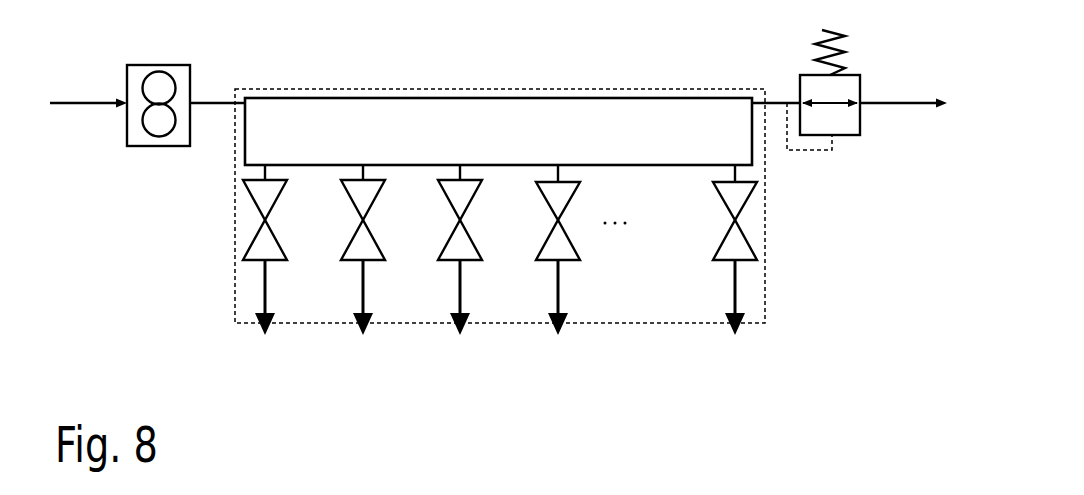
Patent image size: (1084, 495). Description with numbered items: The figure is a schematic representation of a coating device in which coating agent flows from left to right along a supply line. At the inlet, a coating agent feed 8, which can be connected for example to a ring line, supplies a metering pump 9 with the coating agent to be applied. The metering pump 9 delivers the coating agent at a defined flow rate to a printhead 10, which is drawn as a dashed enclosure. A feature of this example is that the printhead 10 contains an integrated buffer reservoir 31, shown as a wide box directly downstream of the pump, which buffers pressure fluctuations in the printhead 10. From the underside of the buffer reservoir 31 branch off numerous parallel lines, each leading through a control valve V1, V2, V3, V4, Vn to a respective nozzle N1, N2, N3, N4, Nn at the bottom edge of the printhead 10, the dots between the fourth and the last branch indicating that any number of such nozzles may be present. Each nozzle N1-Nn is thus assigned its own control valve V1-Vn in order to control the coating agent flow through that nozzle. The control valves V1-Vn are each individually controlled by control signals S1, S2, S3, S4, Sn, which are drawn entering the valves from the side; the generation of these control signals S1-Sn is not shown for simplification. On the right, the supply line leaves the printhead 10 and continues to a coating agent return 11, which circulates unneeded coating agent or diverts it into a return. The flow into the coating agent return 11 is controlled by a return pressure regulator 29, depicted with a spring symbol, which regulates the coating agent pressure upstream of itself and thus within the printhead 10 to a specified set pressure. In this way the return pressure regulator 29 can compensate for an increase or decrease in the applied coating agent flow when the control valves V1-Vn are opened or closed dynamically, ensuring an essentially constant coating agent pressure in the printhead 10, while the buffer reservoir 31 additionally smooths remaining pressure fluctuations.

The coating agent feed 8 is at (102, 103).
The metering pump 9 is at (158, 65).
The printhead 10 is at (235, 285).
The coating agent return 11 is at (930, 102).
The return pressure regulator 29 is at (845, 135).
The buffer reservoir 31 is at (505, 89).
The control signal S1 is at (263, 220).
The control signal S2 is at (361, 220).
The control signal S3 is at (458, 220).
The control signal S4 is at (556, 220).
The control signal Sn is at (733, 220).
The control valve V1 is at (280, 263).
The control valve V2 is at (378, 263).
The control valve V3 is at (475, 263).
The control valve V4 is at (573, 265).
The control valve Vn is at (722, 265).
The nozzle N1 is at (257, 335).
The nozzle N2 is at (352, 335).
The nozzle N3 is at (453, 335).
The nozzle N4 is at (552, 335).
The nozzle Nn is at (730, 335).